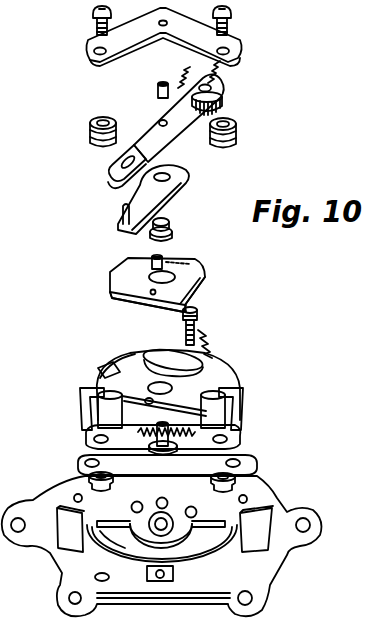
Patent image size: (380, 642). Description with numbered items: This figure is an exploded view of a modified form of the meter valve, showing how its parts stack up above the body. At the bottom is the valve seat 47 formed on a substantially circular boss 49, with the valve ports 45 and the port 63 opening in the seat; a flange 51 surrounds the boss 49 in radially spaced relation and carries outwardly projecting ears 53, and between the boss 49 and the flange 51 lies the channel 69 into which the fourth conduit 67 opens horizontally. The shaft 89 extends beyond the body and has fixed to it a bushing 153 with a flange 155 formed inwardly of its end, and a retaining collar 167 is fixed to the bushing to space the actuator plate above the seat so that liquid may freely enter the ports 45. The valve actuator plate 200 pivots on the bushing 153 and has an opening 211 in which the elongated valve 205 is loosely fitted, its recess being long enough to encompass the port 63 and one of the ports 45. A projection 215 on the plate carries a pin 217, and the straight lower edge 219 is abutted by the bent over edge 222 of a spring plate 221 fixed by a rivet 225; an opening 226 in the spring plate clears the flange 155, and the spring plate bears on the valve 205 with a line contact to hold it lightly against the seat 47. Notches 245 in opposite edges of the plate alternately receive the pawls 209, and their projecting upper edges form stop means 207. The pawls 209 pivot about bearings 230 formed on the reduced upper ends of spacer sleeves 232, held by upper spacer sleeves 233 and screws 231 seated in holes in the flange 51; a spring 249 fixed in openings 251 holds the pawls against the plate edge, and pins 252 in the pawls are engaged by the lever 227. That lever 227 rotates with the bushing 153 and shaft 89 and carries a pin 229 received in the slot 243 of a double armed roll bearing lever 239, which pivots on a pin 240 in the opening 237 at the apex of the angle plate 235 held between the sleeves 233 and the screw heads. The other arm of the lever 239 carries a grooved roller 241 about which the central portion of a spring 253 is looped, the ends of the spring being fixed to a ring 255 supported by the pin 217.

The screws 231 is at (95, 24).
The angle plate 235 is at (101, 64).
The opening 237 is at (164, 28).
The pin 240 is at (157, 88).
The double armed roll bearing lever 239 is at (163, 108).
The grooved roller 241 is at (222, 96).
The spring 253 is at (220, 75).
The upper spacer sleeves 233 is at (88, 135).
The slot 243 is at (110, 165).
The lever 227 is at (182, 180).
The pin 229 is at (120, 206).
The bushing 153 is at (170, 225).
The flange 155 is at (148, 238).
The opening 226 is at (180, 262).
The rivet 225 is at (124, 266).
The spring plate 221 is at (204, 278).
The bent over edge 222 is at (110, 298).
The pin 217 is at (184, 314).
The ring 255 is at (198, 313).
The valve 205 is at (210, 360).
The stop means 207 is at (112, 361).
The projection 215 is at (176, 346).
The opening 211 is at (208, 368).
The notches 245 is at (100, 372).
The spring 249 is at (145, 401).
The lower edge 219 is at (168, 394).
The valve actuator plate 200 is at (238, 382).
The pawls 209 is at (81, 402).
The pins 252 is at (98, 418).
The openings 251 is at (88, 436).
The retaining collar 167 is at (152, 444).
The shaft 89 is at (175, 446).
The bearings 230 is at (78, 464).
The spacer sleeves 232 is at (88, 474).
The flange 51 is at (284, 510).
The valve ports 45 is at (132, 504).
The valve seat 47 is at (113, 528).
The valve port 63 is at (168, 498).
The channel 69 is at (67, 556).
The boss 49 is at (283, 555).
The ears 53 is at (262, 608).
The fourth conduit 67 is at (163, 583).